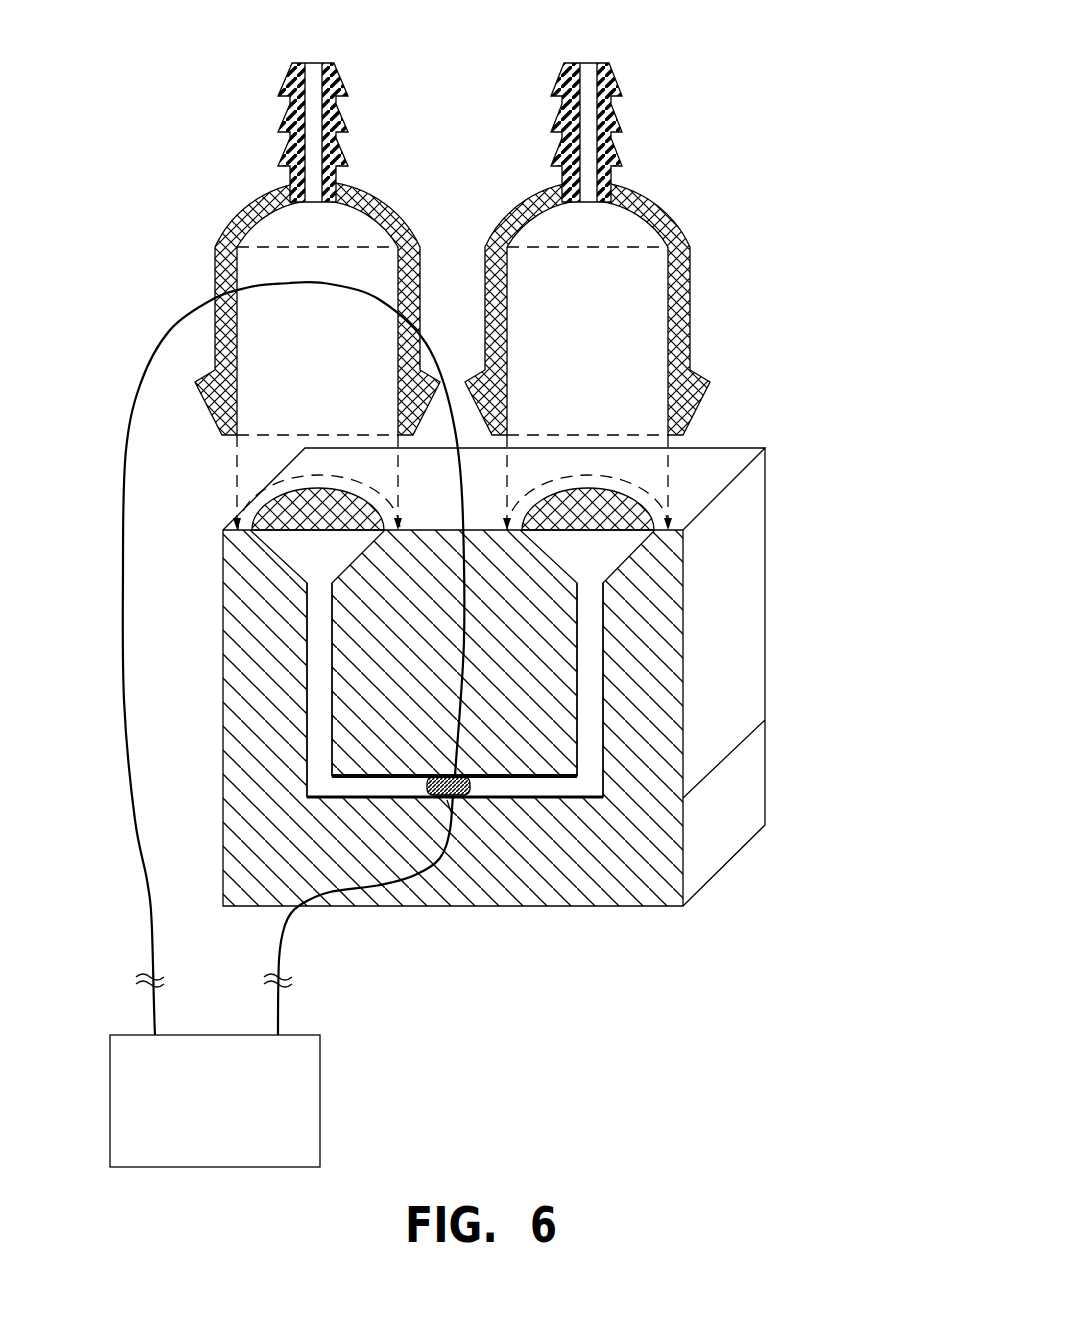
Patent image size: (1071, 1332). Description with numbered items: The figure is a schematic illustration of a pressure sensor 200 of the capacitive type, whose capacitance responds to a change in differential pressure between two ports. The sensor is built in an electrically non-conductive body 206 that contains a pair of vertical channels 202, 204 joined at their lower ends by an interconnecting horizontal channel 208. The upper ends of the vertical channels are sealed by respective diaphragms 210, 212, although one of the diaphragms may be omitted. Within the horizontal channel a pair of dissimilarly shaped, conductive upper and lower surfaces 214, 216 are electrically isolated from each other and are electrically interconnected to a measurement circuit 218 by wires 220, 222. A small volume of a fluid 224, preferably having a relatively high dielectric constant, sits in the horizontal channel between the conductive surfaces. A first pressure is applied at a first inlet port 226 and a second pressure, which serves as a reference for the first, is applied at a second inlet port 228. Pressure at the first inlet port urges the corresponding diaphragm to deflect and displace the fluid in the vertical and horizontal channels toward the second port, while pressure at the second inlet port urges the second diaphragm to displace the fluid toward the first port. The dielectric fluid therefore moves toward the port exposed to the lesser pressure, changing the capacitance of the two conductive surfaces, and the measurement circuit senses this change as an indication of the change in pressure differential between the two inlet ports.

The pressure sensor 200 is at (820, 304).
The vertical channel 202 is at (296, 644).
The vertical channel 204 is at (615, 672).
The electrically non-conductive body 206 is at (767, 585).
The horizontal channel 208 is at (395, 778).
The diaphragm 210 is at (303, 500).
The diaphragm 212 is at (617, 507).
The conductive upper surface 214 is at (491, 793).
The conductive lower surface 216 is at (529, 791).
The measurement circuit 218 is at (322, 1075).
The wire 220 is at (146, 882).
The wire 222 is at (283, 925).
The fluid 224 is at (447, 803).
The first inlet port 226 is at (308, 62).
The second inlet port 228 is at (583, 62).